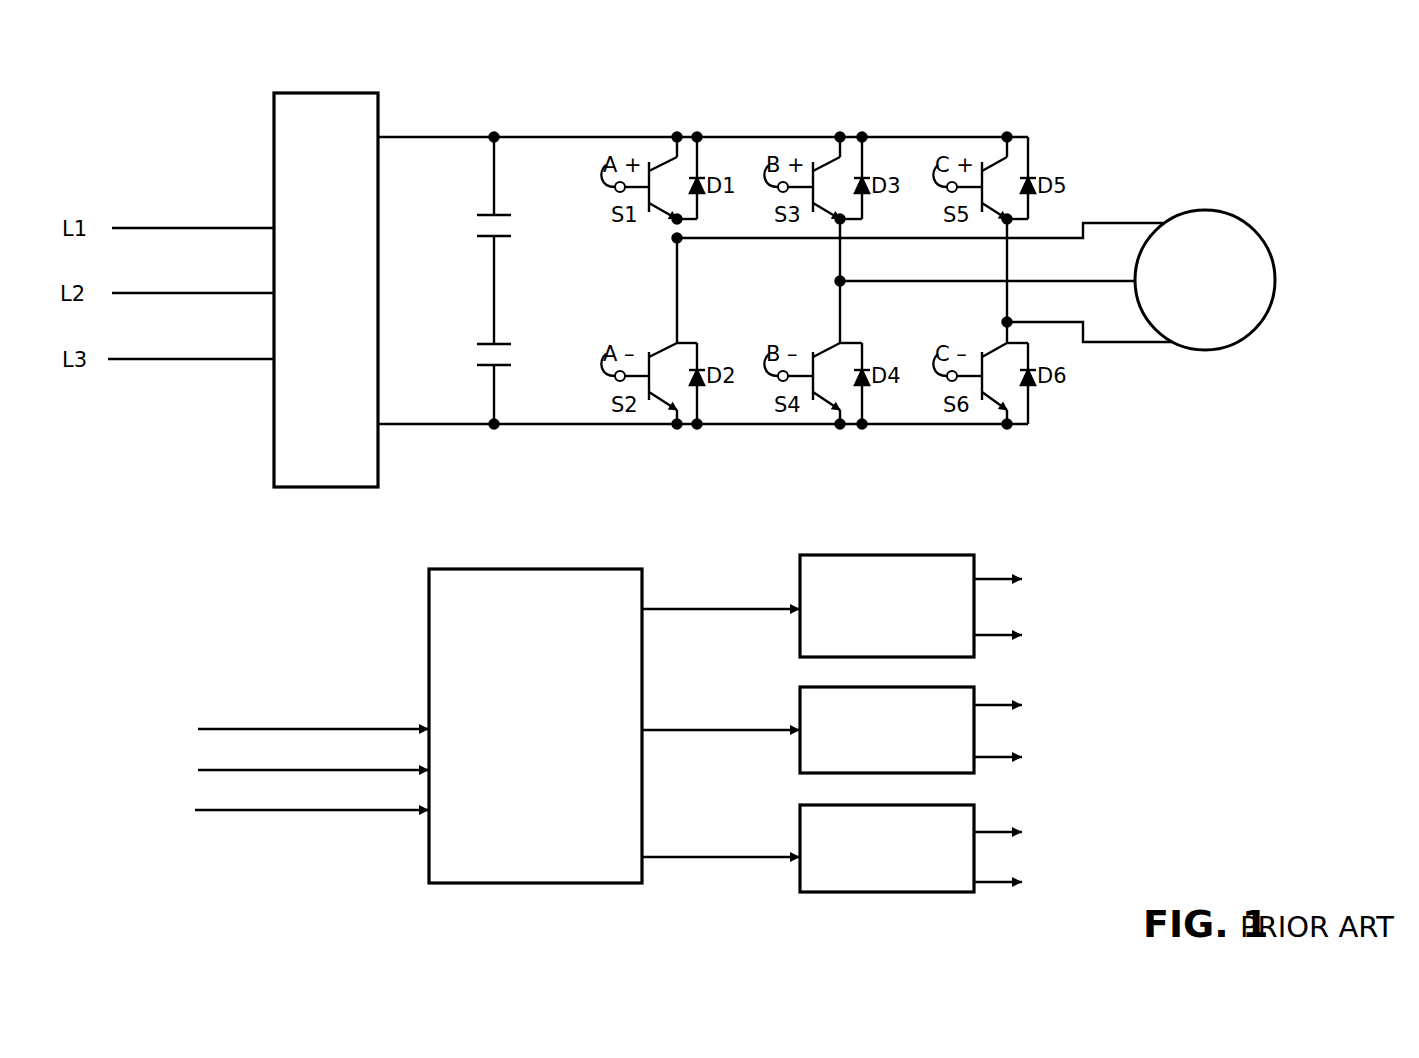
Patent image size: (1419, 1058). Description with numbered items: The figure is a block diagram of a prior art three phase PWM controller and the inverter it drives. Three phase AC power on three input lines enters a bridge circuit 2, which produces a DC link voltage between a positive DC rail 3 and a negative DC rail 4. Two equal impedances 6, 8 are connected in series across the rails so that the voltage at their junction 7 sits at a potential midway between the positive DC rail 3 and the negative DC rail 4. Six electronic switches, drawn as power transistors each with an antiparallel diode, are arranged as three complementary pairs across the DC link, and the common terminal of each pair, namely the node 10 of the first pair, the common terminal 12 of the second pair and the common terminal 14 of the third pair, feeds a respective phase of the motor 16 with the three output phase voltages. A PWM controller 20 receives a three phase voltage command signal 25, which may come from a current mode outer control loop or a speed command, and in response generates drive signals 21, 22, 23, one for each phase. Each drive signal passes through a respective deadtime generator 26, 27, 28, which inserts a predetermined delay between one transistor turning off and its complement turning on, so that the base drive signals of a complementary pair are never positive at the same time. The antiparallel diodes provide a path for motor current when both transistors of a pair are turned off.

The bridge circuit 2 is at (356, 104).
The positive DC rail 3 is at (467, 137).
The negative DC rail 4 is at (418, 426).
The impedance 6 is at (498, 215).
The midpoint voltage node 7 is at (497, 292).
The impedance 8 is at (498, 344).
The phase A output node 10 is at (680, 243).
The common terminal 12 is at (843, 286).
The common terminal 14 is at (1005, 322).
The motor 16 is at (1212, 214).
The PWM controller 20 is at (590, 578).
The drive signal 21 is at (696, 609).
The drive signal 22 is at (690, 730).
The drive signal 23 is at (690, 857).
The voltage command signal 25 is at (312, 736).
The deadtime generator 26 is at (960, 557).
The deadtime generator 27 is at (965, 696).
The deadtime generator 28 is at (962, 810).